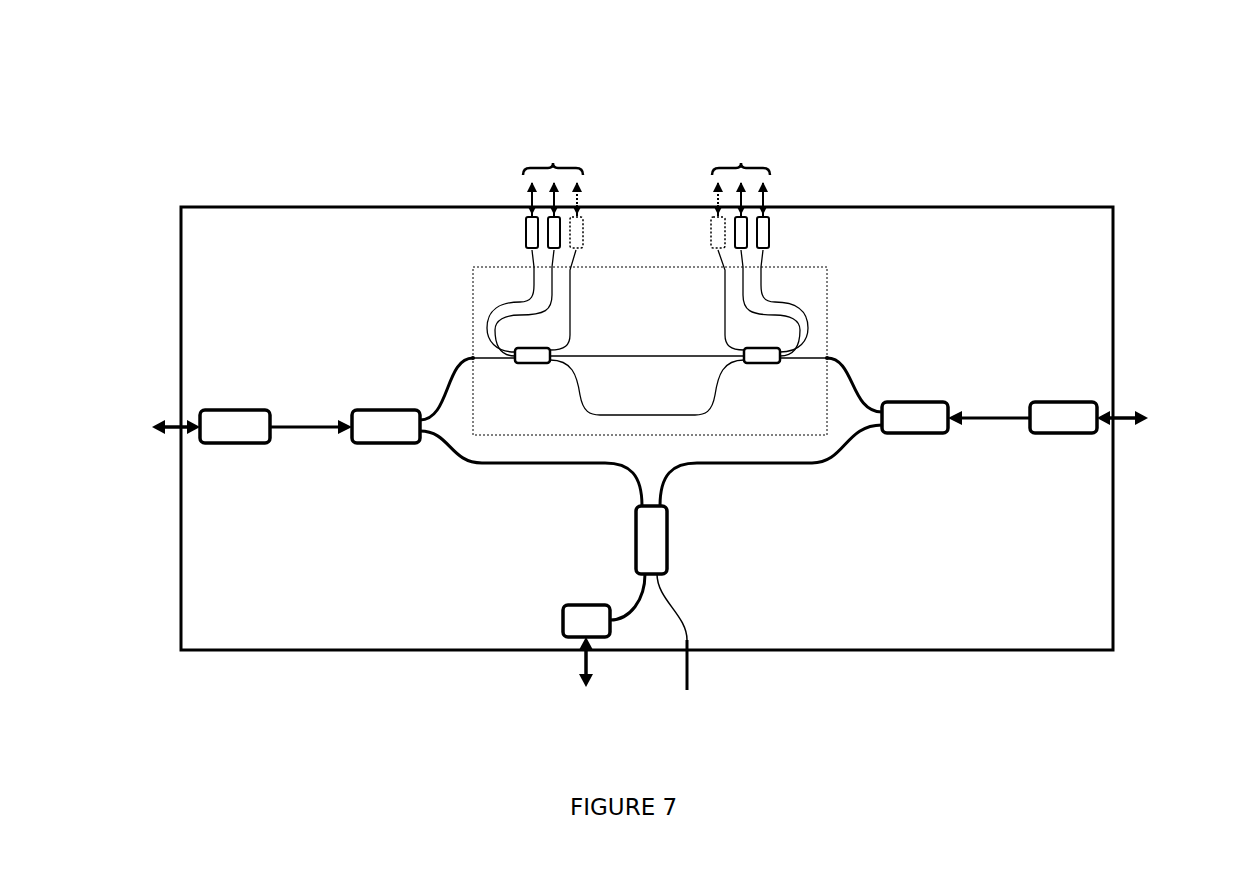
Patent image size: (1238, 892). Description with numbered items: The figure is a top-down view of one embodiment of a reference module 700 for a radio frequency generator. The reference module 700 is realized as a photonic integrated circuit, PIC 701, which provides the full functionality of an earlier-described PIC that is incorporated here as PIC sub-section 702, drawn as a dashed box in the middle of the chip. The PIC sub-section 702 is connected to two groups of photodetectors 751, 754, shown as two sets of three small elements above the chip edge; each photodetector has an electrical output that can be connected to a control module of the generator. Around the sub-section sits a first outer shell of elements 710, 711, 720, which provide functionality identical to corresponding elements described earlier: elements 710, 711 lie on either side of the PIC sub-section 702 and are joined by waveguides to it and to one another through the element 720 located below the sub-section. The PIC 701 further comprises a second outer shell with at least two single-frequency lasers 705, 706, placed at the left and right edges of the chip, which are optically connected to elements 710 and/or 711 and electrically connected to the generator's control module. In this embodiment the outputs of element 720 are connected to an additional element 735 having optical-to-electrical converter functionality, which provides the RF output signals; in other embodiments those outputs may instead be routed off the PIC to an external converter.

The reference module 700 is at (223, 85).
The PIC 701 is at (181, 240).
The PIC sub-section 702 is at (473, 295).
The single-frequency laser 705 is at (233, 412).
The single-frequency laser 706 is at (1067, 400).
The first outer shell element 710 is at (370, 443).
The first outer shell element 711 is at (920, 435).
The first outer shell element 720 is at (670, 542).
The additional element with O/E converter functionality 735 is at (563, 622).
The group of photodetectors 751 is at (553, 190).
The group of photodetectors 754 is at (740, 190).